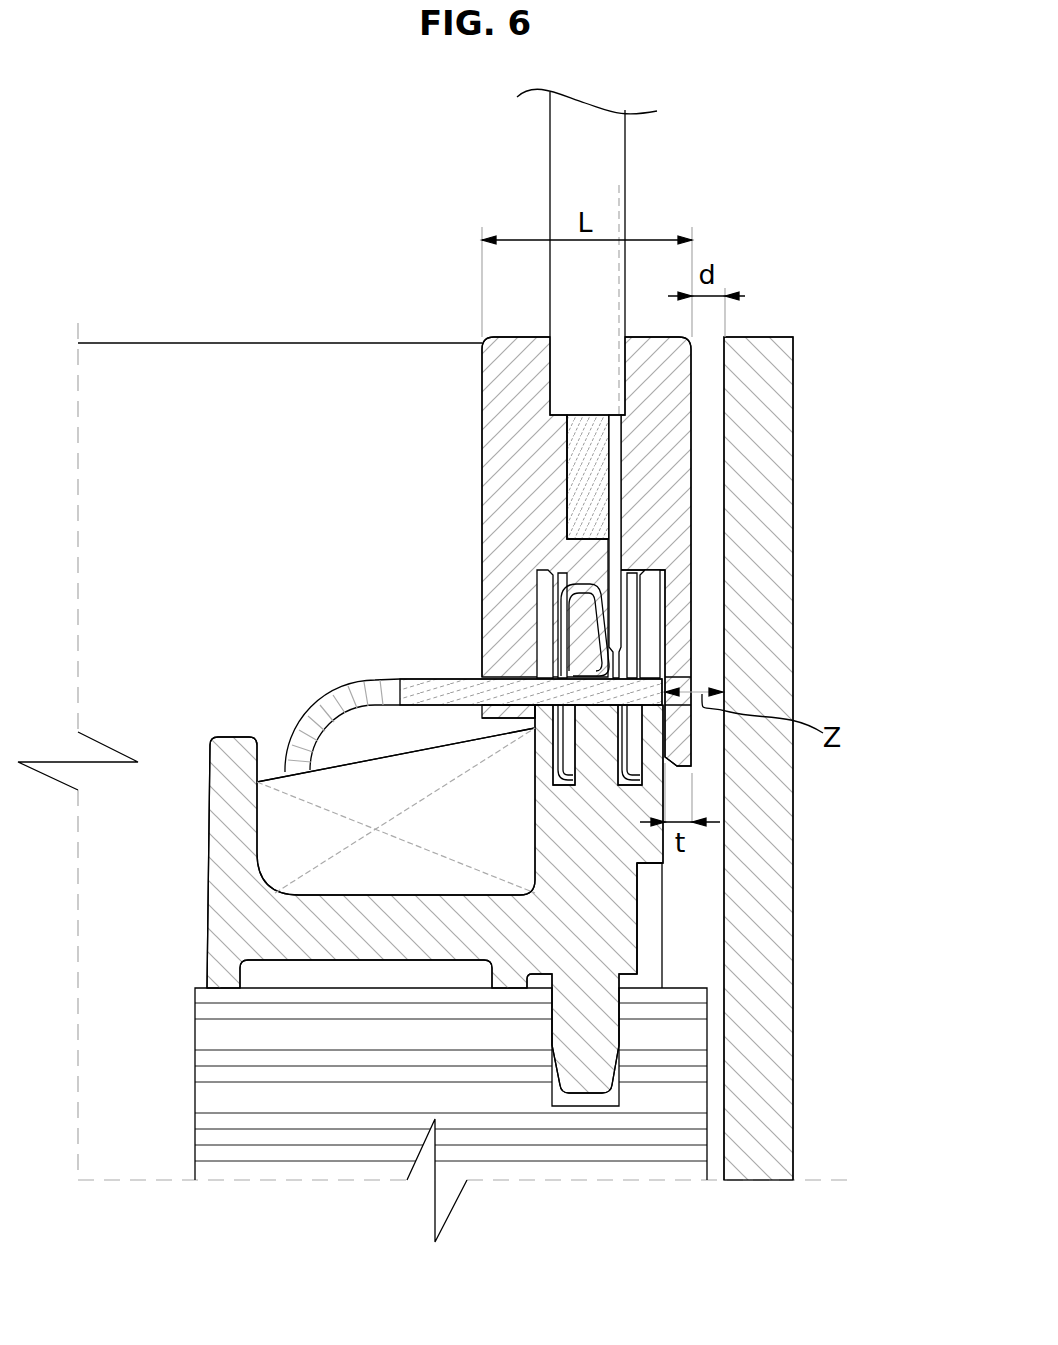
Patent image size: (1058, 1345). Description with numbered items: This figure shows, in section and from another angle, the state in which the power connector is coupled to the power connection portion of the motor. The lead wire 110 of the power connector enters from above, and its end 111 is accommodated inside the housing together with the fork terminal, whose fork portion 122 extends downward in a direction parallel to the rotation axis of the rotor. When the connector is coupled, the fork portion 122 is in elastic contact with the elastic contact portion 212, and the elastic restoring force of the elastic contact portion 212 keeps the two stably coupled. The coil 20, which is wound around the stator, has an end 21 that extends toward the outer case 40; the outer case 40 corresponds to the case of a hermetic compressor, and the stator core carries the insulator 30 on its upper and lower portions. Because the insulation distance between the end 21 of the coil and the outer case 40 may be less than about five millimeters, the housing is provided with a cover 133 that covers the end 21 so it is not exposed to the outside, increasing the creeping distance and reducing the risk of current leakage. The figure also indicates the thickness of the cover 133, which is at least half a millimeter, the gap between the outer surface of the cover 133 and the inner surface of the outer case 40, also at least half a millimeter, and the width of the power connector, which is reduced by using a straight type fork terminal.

The lead wire 110 is at (562, 162).
The end of the lead wire 111 is at (573, 502).
The fork portion 122 is at (621, 550).
The elastic contact portion 212 is at (600, 617).
The cover 133 is at (693, 647).
The end of the coil 21 is at (662, 680).
The coil 20 is at (360, 680).
The insulator 30 is at (470, 441).
The outer case 40 is at (814, 450).